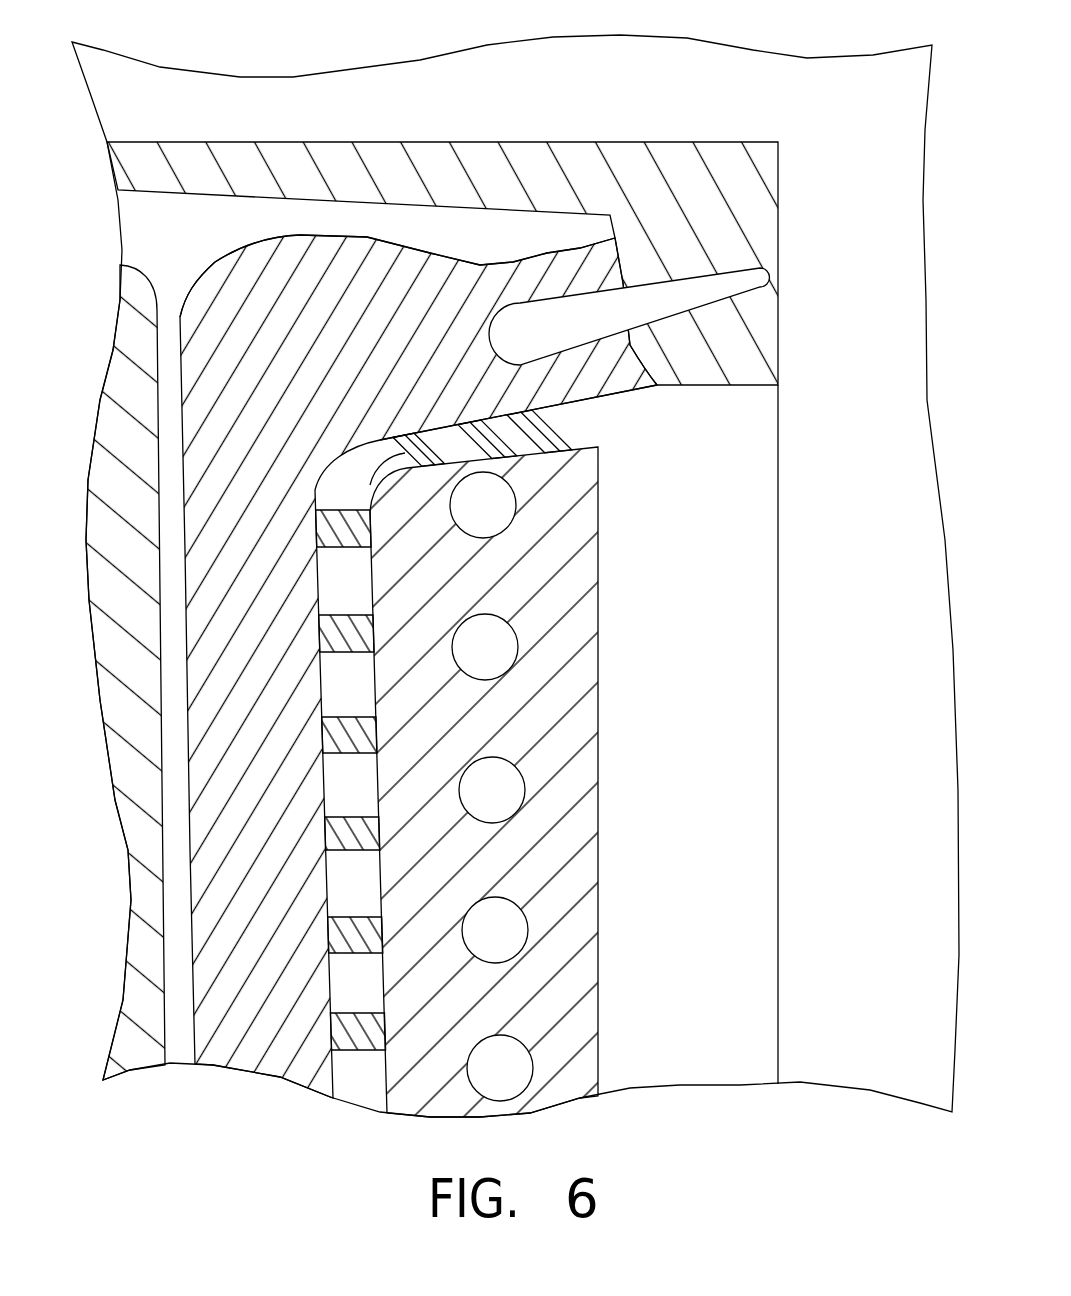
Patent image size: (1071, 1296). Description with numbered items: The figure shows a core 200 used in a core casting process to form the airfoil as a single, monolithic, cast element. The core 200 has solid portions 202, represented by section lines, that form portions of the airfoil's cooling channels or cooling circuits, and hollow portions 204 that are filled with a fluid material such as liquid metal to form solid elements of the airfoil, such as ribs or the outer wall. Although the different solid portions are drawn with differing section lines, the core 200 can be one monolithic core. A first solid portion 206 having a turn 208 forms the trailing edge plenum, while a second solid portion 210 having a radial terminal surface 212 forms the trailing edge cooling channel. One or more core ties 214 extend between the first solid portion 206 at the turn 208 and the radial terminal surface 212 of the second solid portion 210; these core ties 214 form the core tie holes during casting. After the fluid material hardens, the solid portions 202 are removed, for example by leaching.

The core 200 is at (174, 32).
The solid portions 202 is at (257, 262).
The hollow portions 204 is at (170, 243).
The first solid portion 206 is at (250, 957).
The turn 208 is at (343, 263).
The second solid portion 210 is at (543, 757).
The radial terminal surface 212 is at (580, 445).
The core ties 214 is at (550, 422).